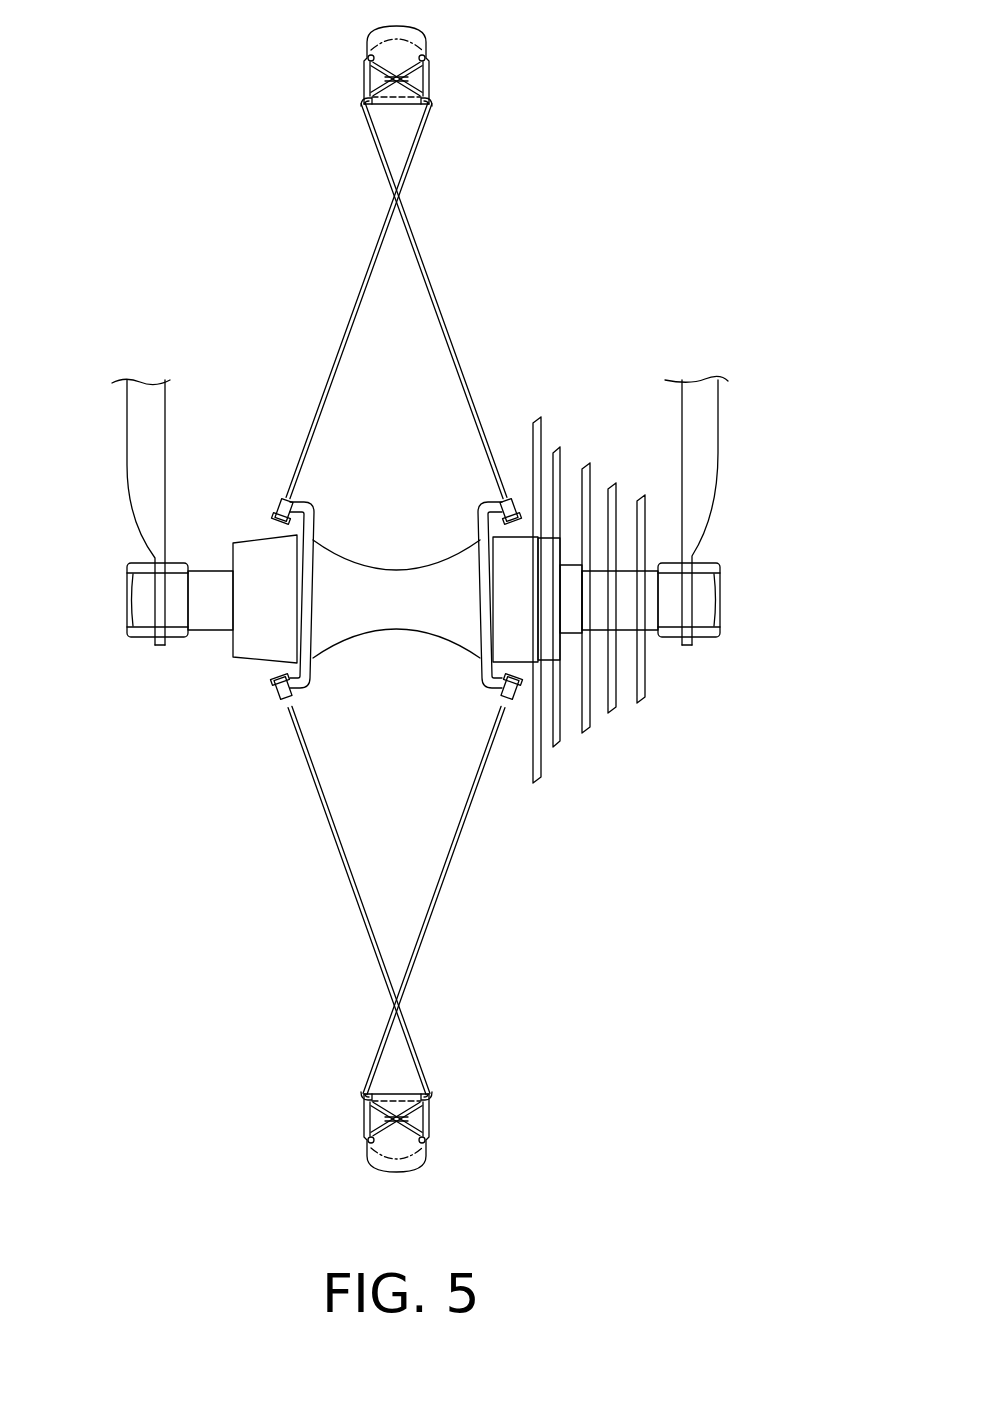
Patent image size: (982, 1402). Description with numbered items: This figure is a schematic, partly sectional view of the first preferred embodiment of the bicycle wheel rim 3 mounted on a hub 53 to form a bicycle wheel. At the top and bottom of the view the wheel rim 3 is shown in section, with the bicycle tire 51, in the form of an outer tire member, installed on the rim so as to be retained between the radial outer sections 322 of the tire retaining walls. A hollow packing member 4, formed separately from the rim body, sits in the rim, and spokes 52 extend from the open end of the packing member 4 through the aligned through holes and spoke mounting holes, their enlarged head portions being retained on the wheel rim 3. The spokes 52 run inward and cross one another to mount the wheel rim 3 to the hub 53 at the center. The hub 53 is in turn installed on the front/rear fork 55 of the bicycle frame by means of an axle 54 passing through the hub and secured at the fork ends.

The bicycle wheel rim 3 is at (428, 80).
The radial outer section 322 is at (424, 59).
The hollow packing member 4 is at (392, 108).
The bicycle tire 51 is at (408, 28).
The spoke 52 is at (420, 143).
The hub 53 is at (437, 628).
The axle 54 is at (627, 592).
The front/rear fork 55 is at (705, 467).